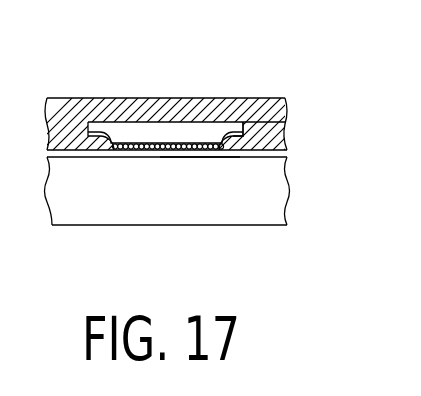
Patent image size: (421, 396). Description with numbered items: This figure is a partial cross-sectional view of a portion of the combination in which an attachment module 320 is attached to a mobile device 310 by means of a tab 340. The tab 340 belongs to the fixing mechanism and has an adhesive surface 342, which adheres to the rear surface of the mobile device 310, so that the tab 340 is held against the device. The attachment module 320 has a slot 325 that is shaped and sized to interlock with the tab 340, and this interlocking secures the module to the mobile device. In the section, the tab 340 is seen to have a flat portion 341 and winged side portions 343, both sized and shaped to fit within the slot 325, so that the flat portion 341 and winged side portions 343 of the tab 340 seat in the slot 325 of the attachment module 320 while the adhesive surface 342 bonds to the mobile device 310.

The mobile device 310 is at (83, 226).
The attachment module 320 is at (150, 98).
The slot 325 is at (126, 122).
The tab 340 is at (189, 142).
The flat portion 341 is at (170, 166).
The adhesive surface 342 is at (204, 165).
The winged side portions 343 is at (256, 125).